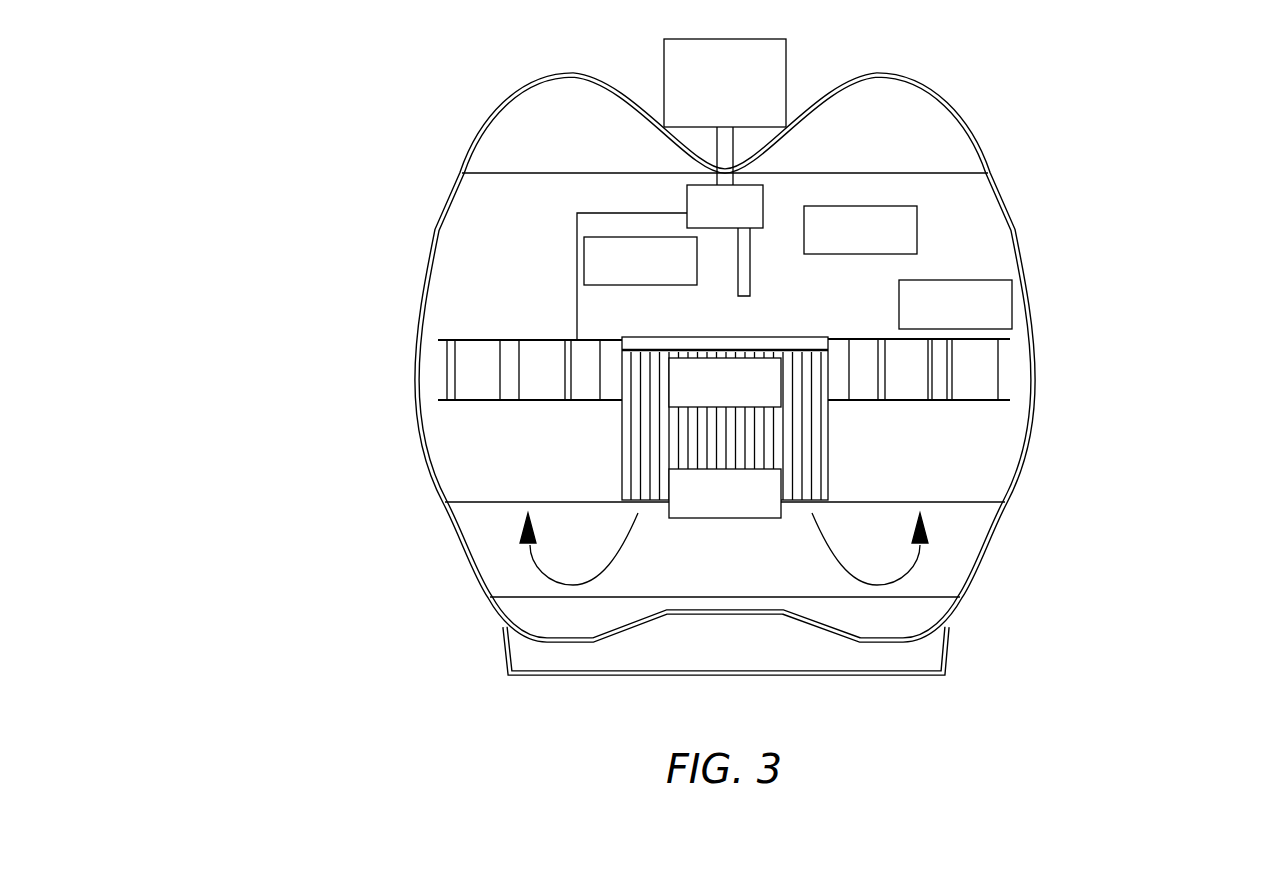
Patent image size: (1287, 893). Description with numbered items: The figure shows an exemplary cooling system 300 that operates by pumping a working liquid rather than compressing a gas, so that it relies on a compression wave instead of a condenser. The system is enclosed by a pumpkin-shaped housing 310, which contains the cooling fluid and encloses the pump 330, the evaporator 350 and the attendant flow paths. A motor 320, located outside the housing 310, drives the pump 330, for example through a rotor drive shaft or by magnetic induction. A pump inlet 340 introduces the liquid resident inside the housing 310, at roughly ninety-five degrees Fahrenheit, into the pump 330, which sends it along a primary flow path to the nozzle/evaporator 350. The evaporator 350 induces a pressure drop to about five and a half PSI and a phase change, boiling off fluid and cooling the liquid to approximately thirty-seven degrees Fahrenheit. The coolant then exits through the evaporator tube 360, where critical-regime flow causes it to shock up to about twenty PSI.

The cooling system 300 is at (733, 363).
The housing 310 is at (482, 121).
The motor 320 is at (757, 56).
The pump 330 is at (764, 195).
The pump inlet 340 is at (749, 294).
The evaporator 350 is at (798, 412).
The evaporator tube 360 is at (872, 610).